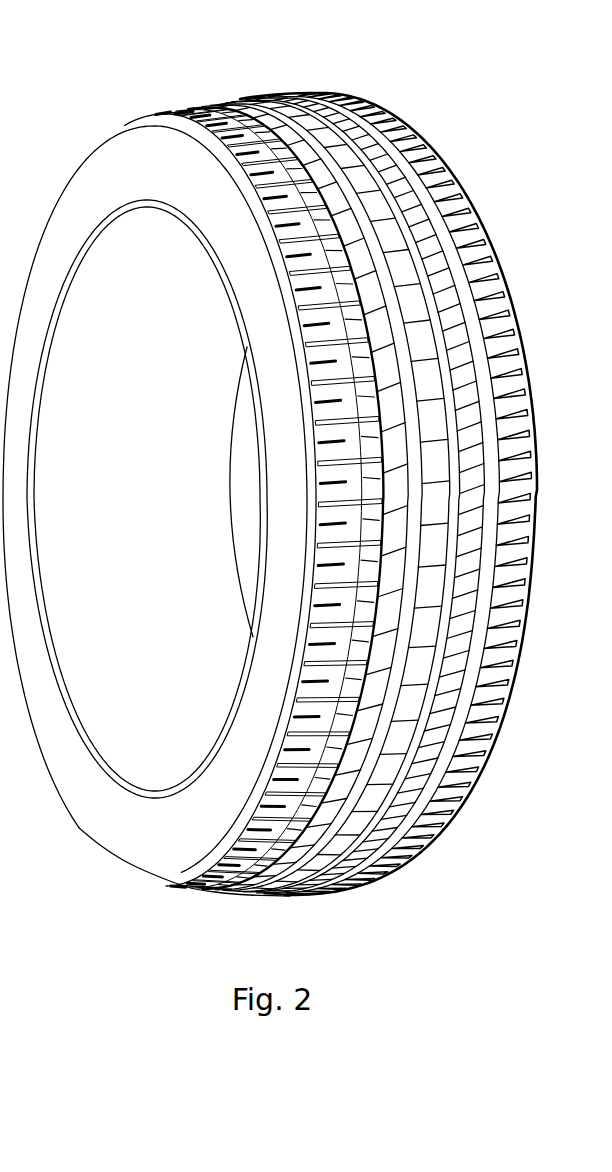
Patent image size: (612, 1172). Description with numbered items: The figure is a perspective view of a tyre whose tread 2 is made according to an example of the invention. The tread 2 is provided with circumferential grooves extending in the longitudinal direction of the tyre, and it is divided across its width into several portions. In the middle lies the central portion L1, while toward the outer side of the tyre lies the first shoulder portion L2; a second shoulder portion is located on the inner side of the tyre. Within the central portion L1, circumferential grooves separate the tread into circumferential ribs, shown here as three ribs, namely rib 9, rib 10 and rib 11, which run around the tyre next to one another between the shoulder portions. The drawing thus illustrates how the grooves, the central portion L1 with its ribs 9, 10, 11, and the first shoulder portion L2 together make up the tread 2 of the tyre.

The tread 2 is at (456, 149).
The circumferential rib 9 is at (237, 97).
The circumferential rib 10 is at (265, 94).
The circumferential rib 11 is at (309, 95).
The central portion L1 is at (370, 106).
The first shoulder portion L2 is at (172, 109).